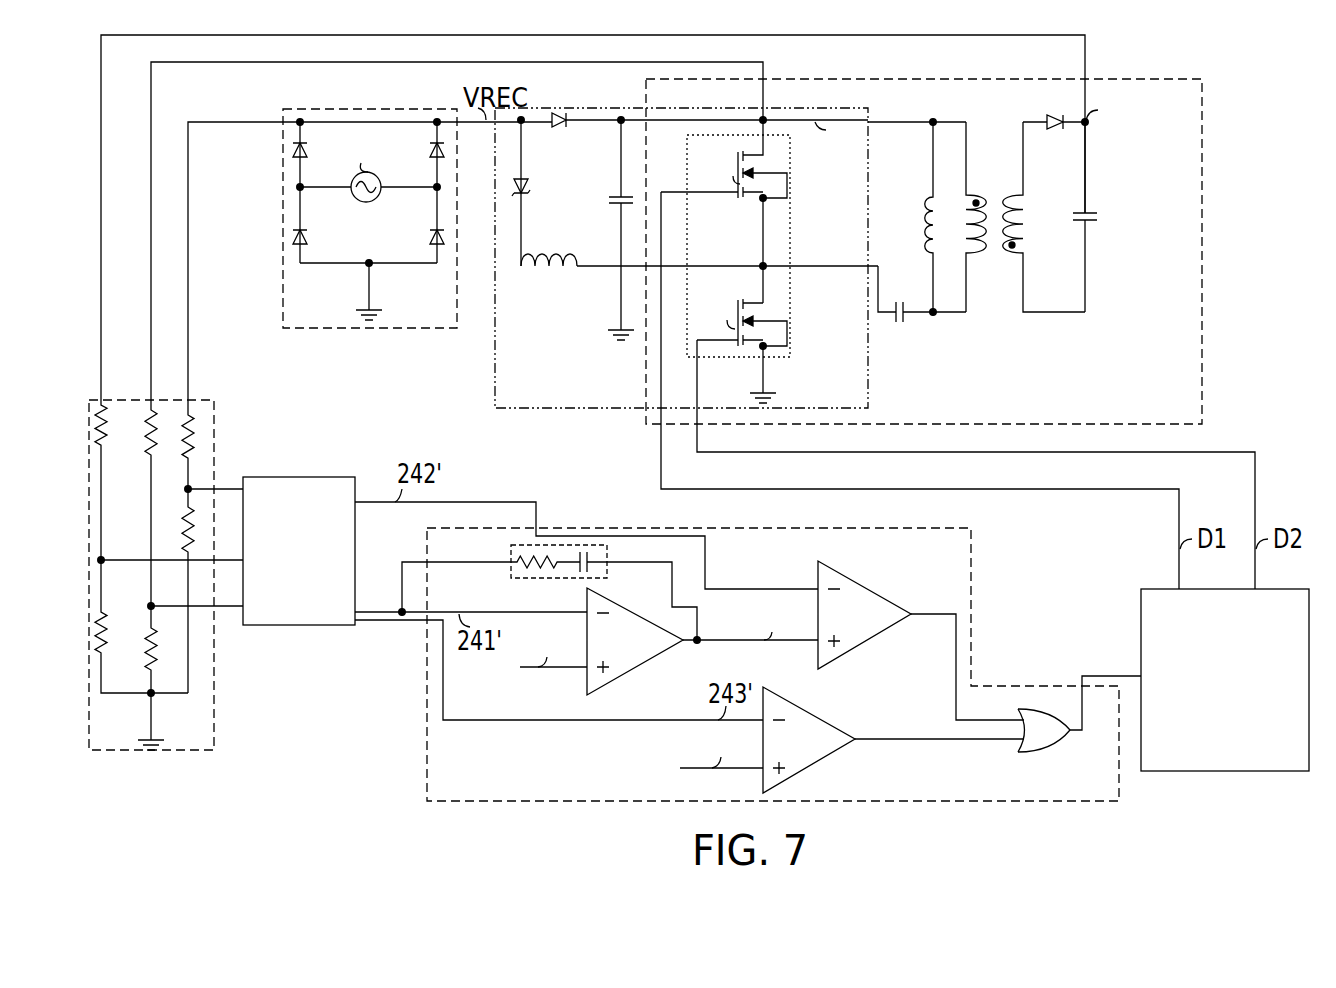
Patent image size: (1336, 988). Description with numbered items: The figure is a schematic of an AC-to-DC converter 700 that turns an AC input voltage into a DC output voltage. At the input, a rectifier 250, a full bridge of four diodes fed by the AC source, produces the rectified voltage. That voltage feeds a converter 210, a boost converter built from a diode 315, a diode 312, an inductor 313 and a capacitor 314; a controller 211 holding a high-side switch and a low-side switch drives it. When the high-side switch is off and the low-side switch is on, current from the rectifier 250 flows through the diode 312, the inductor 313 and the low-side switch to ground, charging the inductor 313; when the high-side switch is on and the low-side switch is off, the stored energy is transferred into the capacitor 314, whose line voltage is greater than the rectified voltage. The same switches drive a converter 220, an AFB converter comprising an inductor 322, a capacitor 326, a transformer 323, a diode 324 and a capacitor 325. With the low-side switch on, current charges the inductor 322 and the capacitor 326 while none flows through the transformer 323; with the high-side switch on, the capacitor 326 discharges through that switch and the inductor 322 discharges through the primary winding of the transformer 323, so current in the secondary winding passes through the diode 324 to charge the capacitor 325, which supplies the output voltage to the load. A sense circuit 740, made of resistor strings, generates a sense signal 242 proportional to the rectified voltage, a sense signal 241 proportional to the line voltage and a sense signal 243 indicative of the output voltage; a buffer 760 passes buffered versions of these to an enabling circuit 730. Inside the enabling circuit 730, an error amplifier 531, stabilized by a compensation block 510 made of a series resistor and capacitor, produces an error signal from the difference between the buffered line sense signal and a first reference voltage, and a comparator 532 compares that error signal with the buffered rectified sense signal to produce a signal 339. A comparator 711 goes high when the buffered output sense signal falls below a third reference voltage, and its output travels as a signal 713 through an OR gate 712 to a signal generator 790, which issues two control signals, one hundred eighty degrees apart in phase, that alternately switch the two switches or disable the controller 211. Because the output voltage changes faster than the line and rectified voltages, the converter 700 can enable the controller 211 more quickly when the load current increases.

The AC-to-DC converter 700 is at (1212, 64).
The rectifier 250 is at (340, 109).
The converter 210 is at (563, 108).
The controller 211 is at (791, 220).
The diode 312 is at (527, 186).
The inductor 313 is at (548, 268).
The capacitor 314 is at (618, 208).
The diode 315 is at (566, 128).
The converter 220 is at (901, 79).
The inductor 322 is at (927, 222).
The transformer 323 is at (969, 196).
The diode 324 is at (1058, 130).
The capacitor 325 is at (1076, 223).
The capacitor 326 is at (903, 324).
The sense circuit 740 is at (174, 561).
The sense signal 241 is at (223, 609).
The sense signal 242 is at (220, 489).
The sense signal 243 is at (126, 549).
The buffer 760 is at (298, 477).
The enabling circuit 730 is at (574, 528).
The compensation block 510 is at (520, 580).
The error amplifier 531 is at (620, 605).
The comparator 532 is at (840, 578).
The signal 339 is at (956, 720).
The comparator 711 is at (826, 731).
The OR gate 712 is at (1030, 755).
The signal 713 is at (1090, 676).
The signal generator 790 is at (1145, 589).